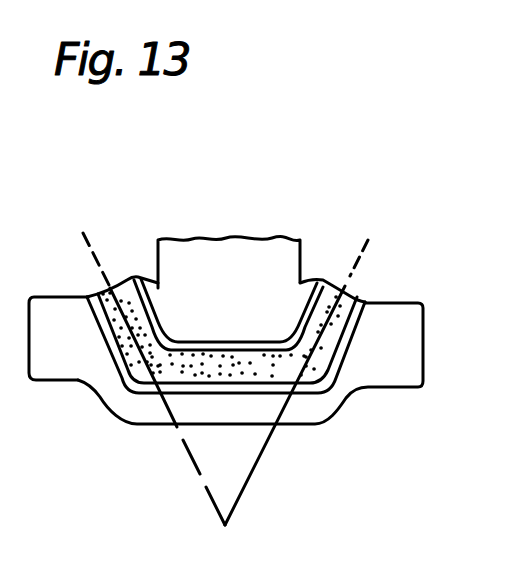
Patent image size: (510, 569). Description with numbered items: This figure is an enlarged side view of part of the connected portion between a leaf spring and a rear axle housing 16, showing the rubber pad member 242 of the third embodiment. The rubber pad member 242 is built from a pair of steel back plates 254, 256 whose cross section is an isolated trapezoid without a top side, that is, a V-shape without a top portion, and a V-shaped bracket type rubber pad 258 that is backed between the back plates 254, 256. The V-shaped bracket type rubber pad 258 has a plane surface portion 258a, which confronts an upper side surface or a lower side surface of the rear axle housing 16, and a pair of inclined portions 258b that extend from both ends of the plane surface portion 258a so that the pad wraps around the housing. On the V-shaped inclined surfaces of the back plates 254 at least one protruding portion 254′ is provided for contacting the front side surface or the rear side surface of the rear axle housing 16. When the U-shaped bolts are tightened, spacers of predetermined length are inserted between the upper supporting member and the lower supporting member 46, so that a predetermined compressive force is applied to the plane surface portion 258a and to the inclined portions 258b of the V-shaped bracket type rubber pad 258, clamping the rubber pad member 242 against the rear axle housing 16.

The rear axle housing 16 is at (264, 287).
The lower supporting member 46 is at (405, 350).
The rubber pad member 242 is at (357, 286).
The steel back plate 254 is at (210, 347).
The protruding portion 254′ is at (143, 280).
The steel back plate 256 is at (157, 381).
The V-shaped bracket type rubber pad 258 is at (265, 365).
The plane surface portion 258a is at (237, 363).
The inclined portions 258b is at (122, 340).